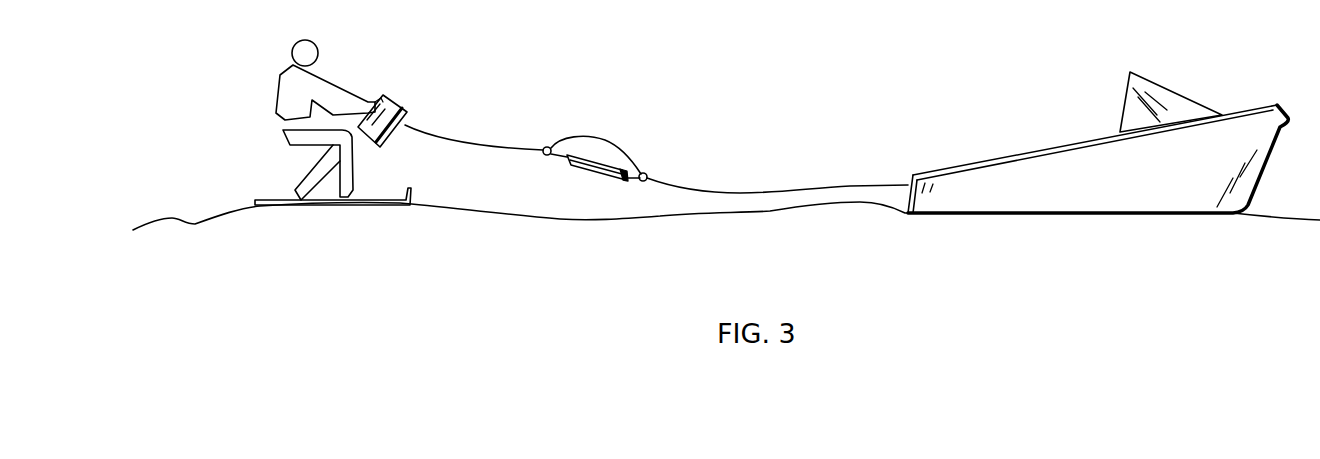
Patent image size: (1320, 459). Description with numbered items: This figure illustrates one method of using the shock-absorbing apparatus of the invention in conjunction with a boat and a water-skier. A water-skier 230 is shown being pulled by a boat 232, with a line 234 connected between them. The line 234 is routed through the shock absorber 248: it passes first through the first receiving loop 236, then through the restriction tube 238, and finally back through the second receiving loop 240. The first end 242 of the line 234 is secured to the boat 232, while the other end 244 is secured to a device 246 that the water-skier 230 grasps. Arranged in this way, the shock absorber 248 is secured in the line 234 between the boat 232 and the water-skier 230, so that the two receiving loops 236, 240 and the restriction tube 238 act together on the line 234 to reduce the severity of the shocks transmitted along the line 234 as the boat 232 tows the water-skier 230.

The water-skier 230 is at (275, 102).
The boat 232 is at (988, 157).
The line 234 is at (837, 187).
The first receiving loop 236 is at (647, 173).
The restriction tube 238 is at (598, 138).
The second receiving loop 240 is at (547, 147).
The first end 242 is at (908, 186).
The other end 244 is at (505, 146).
The device 246 is at (398, 96).
The shock absorber 248 is at (587, 170).